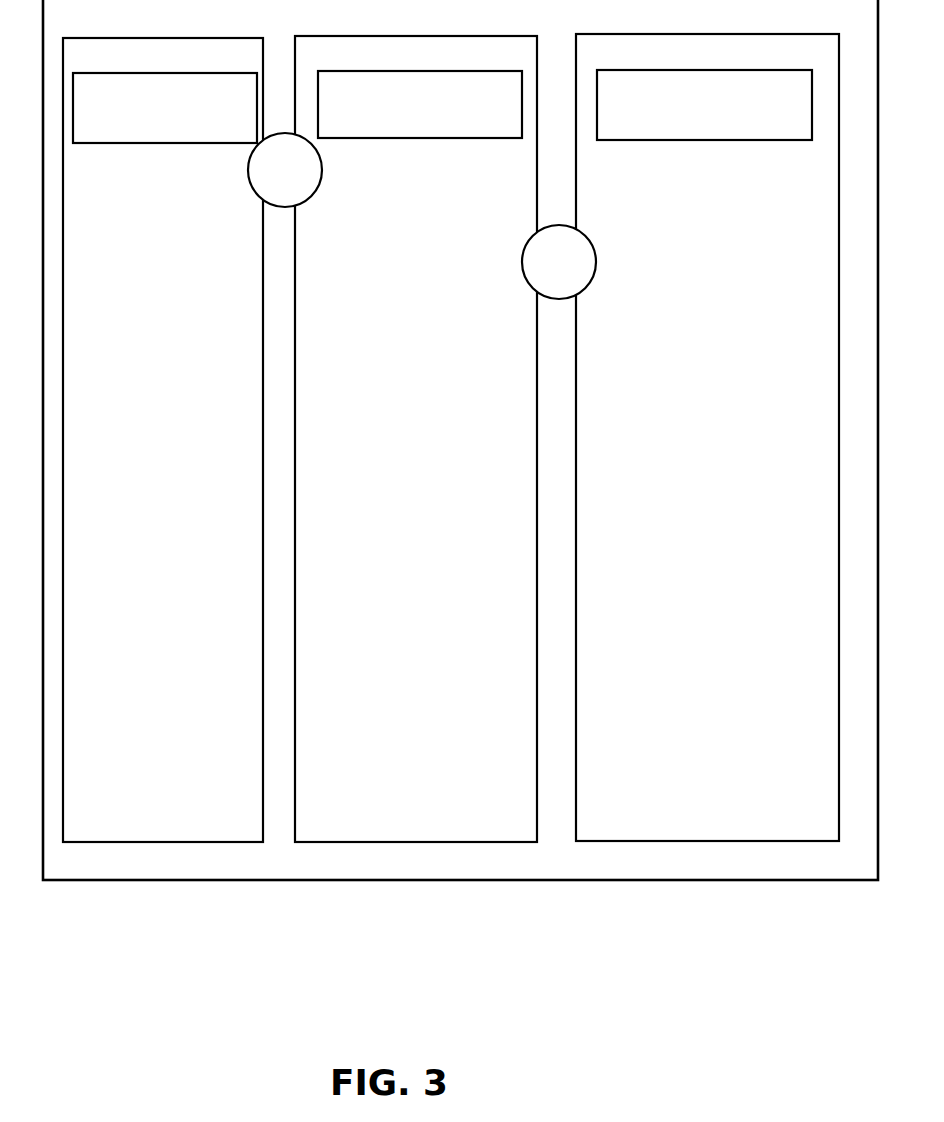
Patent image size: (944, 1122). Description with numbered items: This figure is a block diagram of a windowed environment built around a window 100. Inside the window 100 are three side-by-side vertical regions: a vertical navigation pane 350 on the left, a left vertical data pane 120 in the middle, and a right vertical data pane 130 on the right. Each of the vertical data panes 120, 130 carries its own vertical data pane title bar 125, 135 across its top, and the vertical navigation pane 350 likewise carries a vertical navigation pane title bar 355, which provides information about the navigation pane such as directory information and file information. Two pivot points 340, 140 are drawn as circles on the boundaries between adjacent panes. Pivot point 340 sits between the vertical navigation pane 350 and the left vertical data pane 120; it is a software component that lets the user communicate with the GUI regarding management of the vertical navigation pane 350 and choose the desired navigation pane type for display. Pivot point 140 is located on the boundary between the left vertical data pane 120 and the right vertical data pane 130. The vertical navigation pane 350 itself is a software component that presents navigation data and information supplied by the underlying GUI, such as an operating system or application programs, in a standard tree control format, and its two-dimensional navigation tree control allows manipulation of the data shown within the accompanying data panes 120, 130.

The window 100 is at (460, 440).
The vertical navigation pane 350 is at (163, 440).
The vertical navigation pane title bar 355 is at (165, 108).
The left vertical data pane 120 is at (416, 439).
The vertical data pane title bar 125 is at (420, 104).
The right vertical data pane 130 is at (707, 437).
The vertical data pane title bar 135 is at (704, 105).
The pivot point 340 is at (285, 170).
The pivot point 140 is at (559, 262).